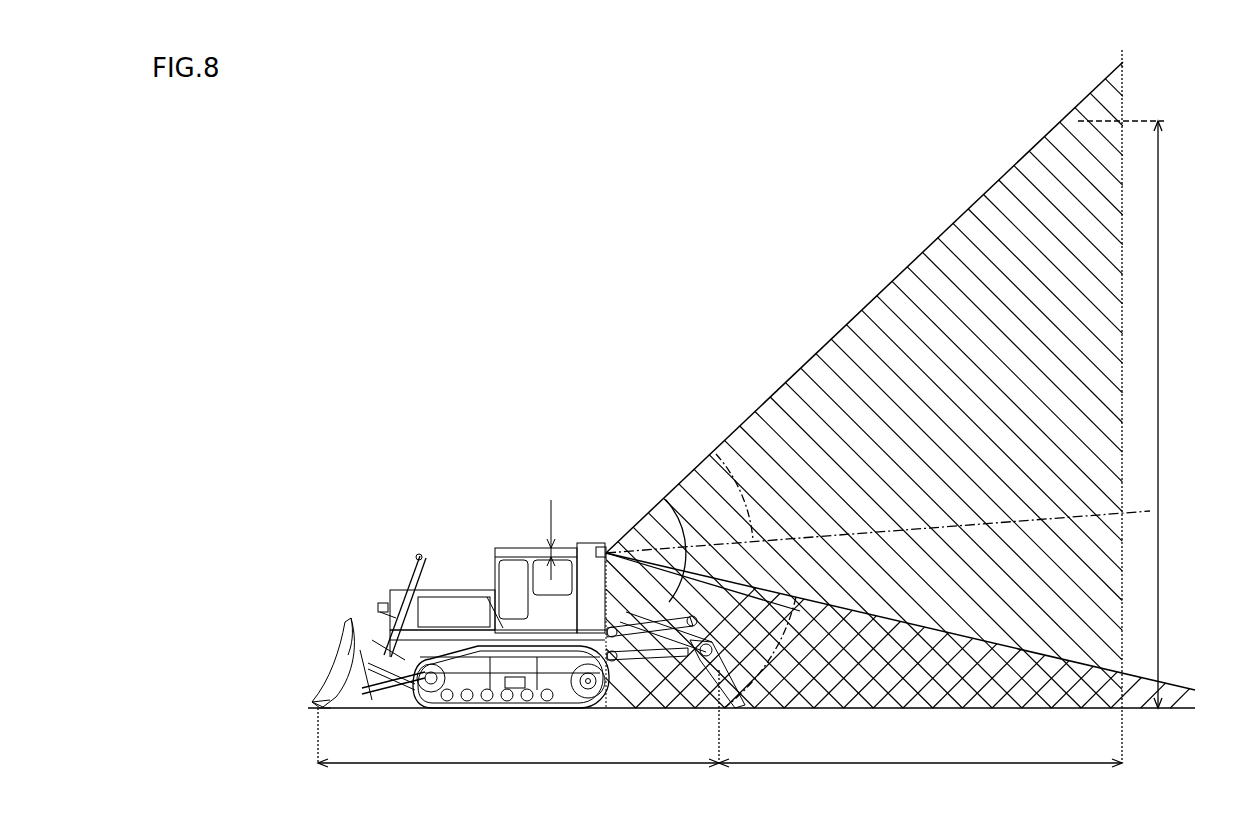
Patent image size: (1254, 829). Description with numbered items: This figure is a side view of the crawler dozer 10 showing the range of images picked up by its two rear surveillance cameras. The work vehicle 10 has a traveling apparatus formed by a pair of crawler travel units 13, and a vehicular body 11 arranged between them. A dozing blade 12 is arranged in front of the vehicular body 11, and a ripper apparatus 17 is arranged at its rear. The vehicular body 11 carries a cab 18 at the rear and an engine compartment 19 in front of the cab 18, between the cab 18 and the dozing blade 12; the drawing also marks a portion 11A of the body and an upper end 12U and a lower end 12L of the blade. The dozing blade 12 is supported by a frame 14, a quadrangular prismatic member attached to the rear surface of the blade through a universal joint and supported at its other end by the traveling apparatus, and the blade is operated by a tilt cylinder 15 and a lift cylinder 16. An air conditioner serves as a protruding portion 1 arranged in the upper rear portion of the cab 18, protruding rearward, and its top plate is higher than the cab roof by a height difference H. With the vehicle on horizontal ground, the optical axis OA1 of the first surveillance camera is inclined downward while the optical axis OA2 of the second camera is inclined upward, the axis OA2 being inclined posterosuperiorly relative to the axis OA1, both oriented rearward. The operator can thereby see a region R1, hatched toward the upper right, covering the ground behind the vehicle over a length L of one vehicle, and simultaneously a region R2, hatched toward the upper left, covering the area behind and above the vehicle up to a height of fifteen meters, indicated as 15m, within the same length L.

The protruding portion 1 is at (594, 546).
The crawler dozer 10 is at (498, 616).
The vehicular body 11 is at (481, 603).
The front portion of vehicle body 11A is at (387, 600).
The dozing blade 12 is at (303, 651).
The upper end of blade 12U is at (350, 622).
The lower end of blade 12L is at (343, 656).
The crawler travel unit 13 is at (517, 710).
The frame 14 is at (400, 700).
The tilt cylinder 15 is at (380, 700).
The lift cylinder 16 is at (418, 556).
The ripper apparatus 17 is at (677, 625).
The cab 18 is at (538, 549).
The engine compartment 19 is at (442, 607).
The optical axis OA1 is at (745, 710).
The optical axis OA2 is at (716, 452).
The region R1 is at (787, 690).
The region R2 is at (878, 312).
The height difference H is at (544, 540).
The length of one vehicle L is at (720, 774).
The height dimension 15m is at (1139, 414).